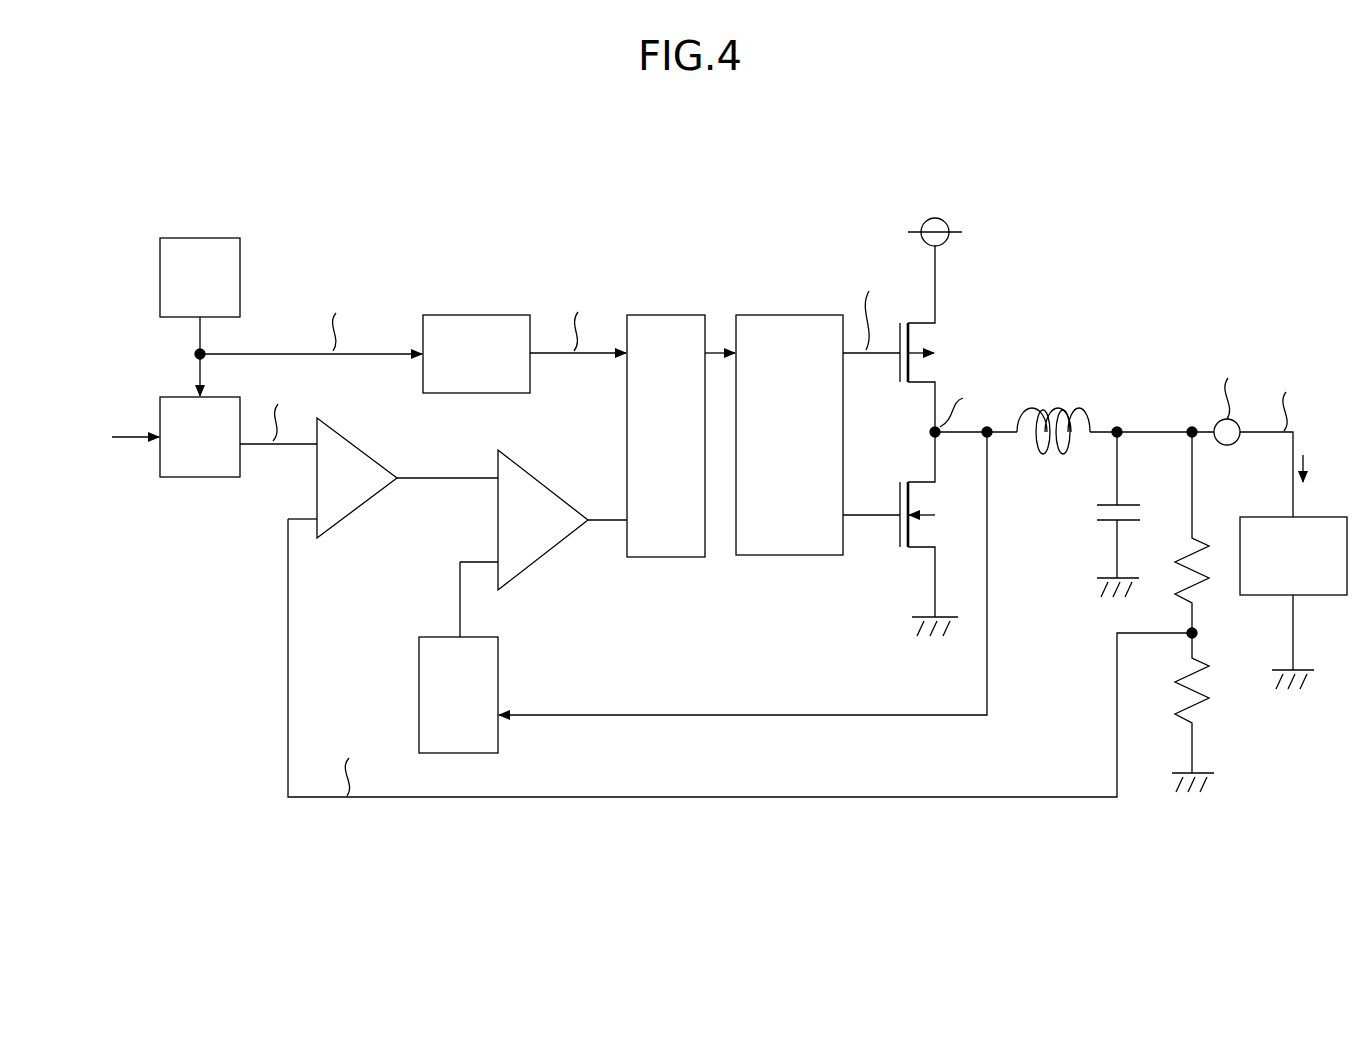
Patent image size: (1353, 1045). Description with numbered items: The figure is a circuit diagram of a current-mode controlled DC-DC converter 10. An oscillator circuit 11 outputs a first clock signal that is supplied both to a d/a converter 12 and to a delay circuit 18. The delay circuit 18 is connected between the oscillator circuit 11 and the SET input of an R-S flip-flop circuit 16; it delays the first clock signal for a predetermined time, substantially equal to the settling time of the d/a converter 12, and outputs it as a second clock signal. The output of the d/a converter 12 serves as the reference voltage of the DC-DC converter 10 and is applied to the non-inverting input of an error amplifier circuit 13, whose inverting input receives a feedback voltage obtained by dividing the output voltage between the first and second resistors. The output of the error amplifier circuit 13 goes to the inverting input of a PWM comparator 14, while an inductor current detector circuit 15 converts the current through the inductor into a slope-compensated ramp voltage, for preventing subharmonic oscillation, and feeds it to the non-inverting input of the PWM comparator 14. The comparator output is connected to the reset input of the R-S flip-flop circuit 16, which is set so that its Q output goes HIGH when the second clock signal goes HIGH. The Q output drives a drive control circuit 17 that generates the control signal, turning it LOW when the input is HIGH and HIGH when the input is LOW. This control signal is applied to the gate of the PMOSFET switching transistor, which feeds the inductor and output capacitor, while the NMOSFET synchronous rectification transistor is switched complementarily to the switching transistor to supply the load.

The DC-DC converter 10 is at (540, 236).
The oscillator circuit 11 is at (200, 238).
The d/a converter 12 is at (200, 477).
The error amplifier circuit 13 is at (360, 446).
The PWM comparator 14 is at (541, 478).
The inductor current detector circuit 15 is at (440, 637).
The R-S flip-flop circuit 16 is at (646, 315).
The drive control circuit 17 is at (775, 315).
The delay circuit 18 is at (474, 315).